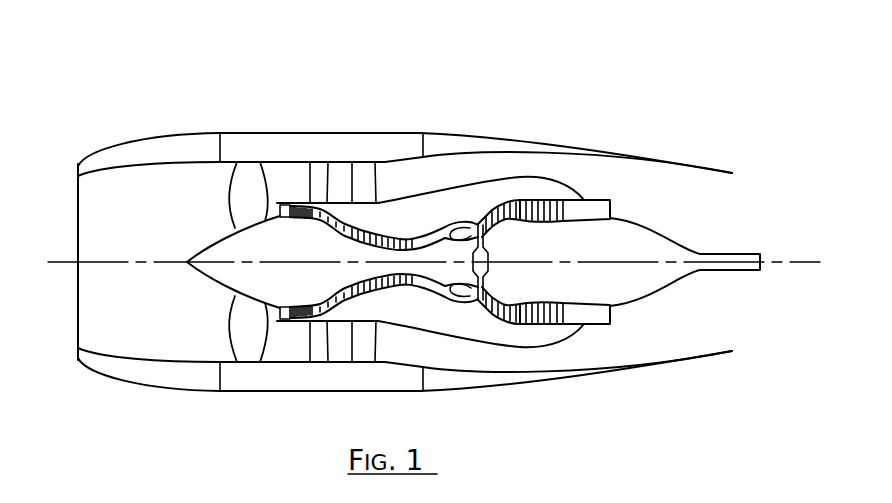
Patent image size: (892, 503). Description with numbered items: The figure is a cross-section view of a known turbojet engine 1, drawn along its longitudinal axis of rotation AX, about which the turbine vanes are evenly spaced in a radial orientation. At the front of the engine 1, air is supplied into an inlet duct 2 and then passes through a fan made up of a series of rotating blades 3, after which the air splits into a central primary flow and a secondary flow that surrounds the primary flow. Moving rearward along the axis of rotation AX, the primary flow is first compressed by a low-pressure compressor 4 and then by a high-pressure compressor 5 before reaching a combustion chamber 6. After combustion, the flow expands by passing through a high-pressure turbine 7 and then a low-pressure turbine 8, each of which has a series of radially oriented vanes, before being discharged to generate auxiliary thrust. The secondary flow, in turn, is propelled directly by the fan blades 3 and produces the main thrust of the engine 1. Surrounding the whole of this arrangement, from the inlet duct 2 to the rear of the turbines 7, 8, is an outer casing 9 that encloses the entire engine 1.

The turbojet engine 1 is at (125, 65).
The inlet duct 2 is at (356, 262).
The rotating blades 3 is at (237, 328).
The low-pressure compressor 4 is at (292, 203).
The high-pressure compressor 5 is at (393, 228).
The combustion chamber 6 is at (458, 227).
The high-pressure turbine 7 is at (493, 210).
The low-pressure turbine 8 is at (532, 197).
The outer casing 9 is at (347, 145).
The axis of rotation AX is at (62, 262).